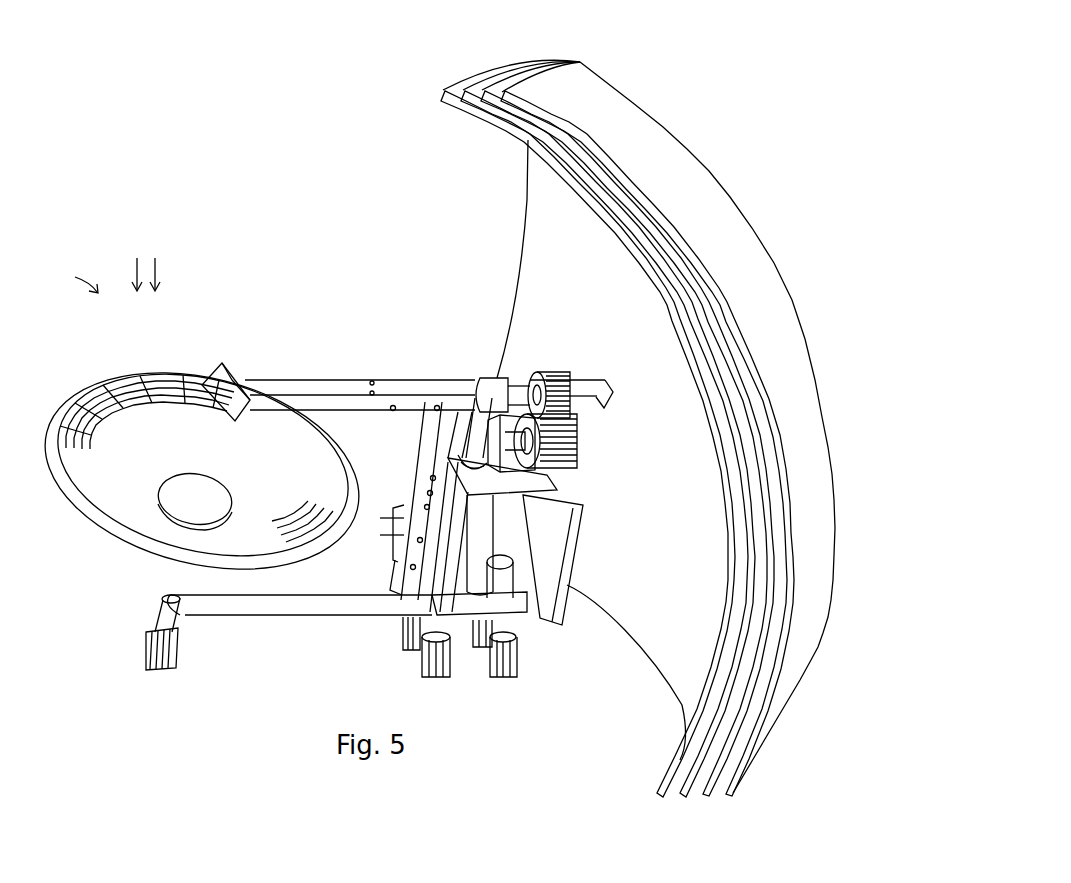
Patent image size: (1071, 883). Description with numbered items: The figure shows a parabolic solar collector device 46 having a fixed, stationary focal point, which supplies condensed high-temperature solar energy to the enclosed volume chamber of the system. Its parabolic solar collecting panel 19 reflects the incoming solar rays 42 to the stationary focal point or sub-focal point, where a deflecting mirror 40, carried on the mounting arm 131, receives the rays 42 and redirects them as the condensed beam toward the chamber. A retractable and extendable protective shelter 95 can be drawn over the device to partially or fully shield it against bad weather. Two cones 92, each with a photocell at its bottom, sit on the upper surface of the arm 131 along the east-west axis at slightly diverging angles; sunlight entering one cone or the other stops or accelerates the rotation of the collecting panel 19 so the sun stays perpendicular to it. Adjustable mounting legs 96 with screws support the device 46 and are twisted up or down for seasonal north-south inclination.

The solar collecting panel 19 is at (110, 520).
The deflecting mirror 40 is at (220, 375).
The solar rays 42 is at (133, 272).
The solar collector device 46 is at (69, 279).
The cones 92 is at (372, 380).
The retractable/extendable protective shelter 95 is at (538, 248).
The adjustable mounting legs 96 is at (162, 672).
The mounting arm 131 is at (405, 385).